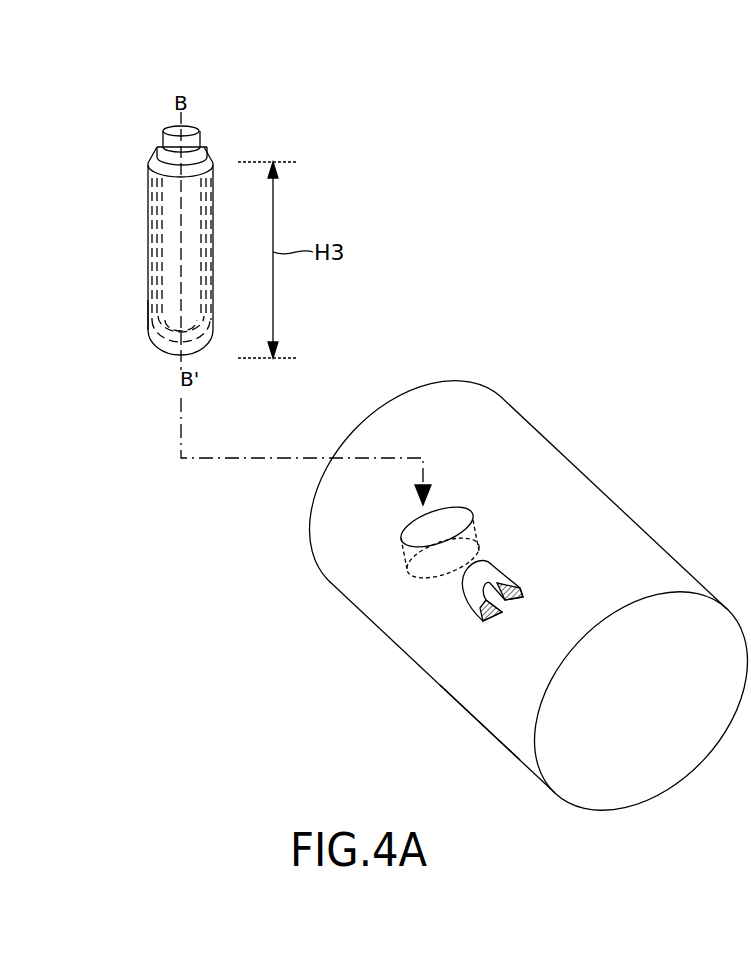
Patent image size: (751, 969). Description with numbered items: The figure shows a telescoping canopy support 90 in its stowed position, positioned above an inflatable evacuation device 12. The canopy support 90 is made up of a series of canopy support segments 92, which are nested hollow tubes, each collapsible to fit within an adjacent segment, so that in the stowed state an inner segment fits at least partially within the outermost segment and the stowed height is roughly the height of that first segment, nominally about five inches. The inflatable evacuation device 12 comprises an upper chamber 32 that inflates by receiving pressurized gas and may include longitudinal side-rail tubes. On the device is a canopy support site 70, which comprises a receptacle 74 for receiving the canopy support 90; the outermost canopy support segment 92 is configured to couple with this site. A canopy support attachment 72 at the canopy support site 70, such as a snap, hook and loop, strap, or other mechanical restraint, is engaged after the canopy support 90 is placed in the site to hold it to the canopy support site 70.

The canopy support 90 is at (98, 186).
The canopy support segments 92 is at (147, 335).
The inflatable evacuation device 12 is at (673, 494).
The upper chamber 32 is at (493, 712).
The canopy support site 70 is at (427, 578).
The canopy support attachment 72 is at (497, 572).
The receptacle 74 is at (476, 533).